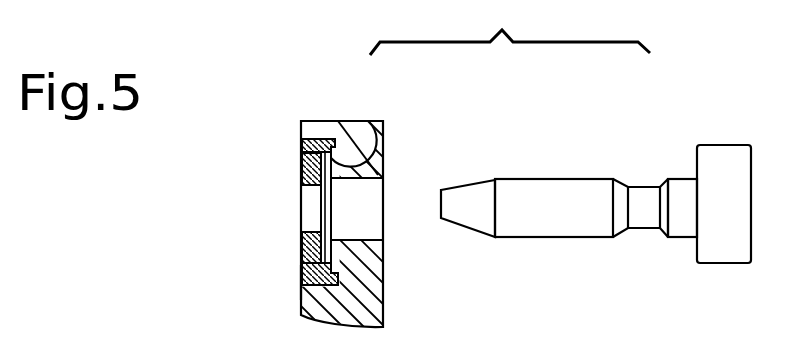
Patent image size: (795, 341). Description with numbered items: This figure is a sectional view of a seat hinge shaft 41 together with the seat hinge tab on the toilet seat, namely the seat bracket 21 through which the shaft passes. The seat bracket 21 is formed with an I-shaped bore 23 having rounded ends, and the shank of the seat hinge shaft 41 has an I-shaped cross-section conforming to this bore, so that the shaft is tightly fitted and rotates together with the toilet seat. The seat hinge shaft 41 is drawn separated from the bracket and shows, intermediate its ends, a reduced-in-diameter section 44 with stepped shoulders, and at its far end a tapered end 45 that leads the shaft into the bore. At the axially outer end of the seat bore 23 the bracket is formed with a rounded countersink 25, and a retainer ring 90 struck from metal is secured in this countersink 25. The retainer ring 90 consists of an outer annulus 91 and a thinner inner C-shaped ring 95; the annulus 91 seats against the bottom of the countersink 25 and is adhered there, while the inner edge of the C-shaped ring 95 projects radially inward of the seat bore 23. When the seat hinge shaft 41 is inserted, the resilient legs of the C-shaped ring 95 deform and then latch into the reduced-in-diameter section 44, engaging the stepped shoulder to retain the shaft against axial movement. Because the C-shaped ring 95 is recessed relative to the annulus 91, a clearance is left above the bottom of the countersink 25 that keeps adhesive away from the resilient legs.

The seat bracket 21 is at (338, 121).
The I-shaped bore 23 is at (370, 210).
The countersink 25 is at (370, 121).
The seat hinge shaft 41 is at (733, 152).
The reduced-in-diameter section 44 is at (648, 205).
The tapered end 45 is at (472, 188).
The retainer ring 90 is at (298, 283).
The outer annulus 91 is at (301, 147).
The inner C-shaped ring 95 is at (301, 181).